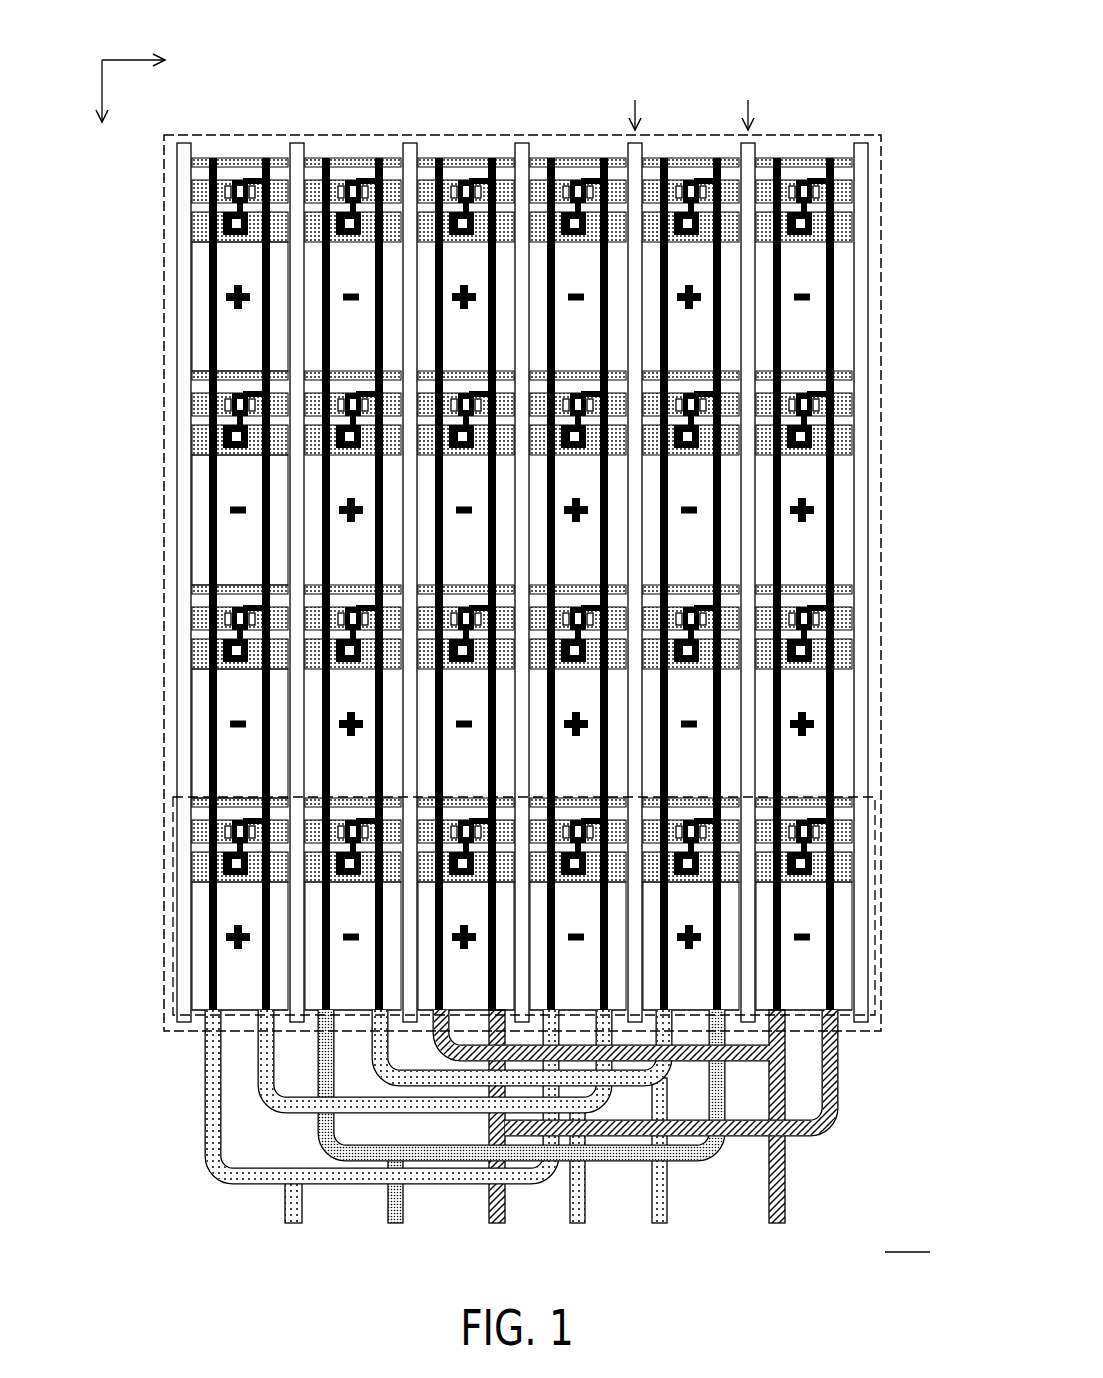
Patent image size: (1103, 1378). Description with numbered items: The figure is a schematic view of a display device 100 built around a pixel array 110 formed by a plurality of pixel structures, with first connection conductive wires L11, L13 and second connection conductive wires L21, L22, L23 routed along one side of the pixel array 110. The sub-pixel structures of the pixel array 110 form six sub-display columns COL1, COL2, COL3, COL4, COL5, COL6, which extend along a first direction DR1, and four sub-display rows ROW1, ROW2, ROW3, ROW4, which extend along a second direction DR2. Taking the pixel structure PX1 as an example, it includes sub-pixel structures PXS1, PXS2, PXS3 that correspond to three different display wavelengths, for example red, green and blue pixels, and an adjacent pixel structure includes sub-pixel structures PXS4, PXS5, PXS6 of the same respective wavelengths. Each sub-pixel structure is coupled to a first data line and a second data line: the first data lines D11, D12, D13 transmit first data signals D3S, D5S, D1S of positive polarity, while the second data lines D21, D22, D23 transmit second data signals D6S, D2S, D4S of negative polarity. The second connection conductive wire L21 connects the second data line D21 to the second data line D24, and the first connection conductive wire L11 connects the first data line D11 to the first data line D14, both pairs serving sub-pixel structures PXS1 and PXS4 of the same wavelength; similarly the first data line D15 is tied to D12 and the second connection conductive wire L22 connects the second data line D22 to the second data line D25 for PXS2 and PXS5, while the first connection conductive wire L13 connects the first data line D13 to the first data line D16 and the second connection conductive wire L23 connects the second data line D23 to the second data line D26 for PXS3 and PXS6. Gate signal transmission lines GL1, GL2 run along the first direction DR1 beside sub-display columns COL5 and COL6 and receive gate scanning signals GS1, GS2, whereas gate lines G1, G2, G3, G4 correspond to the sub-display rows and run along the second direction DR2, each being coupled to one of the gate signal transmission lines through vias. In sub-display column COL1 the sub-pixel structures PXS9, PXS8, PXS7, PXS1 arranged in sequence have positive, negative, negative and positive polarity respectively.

The display device 100 is at (907, 1238).
The pixel array 110 is at (882, 192).
The pixel structure PX1 is at (173, 983).
The sub-pixel structure PXS1 is at (240, 946).
The sub-pixel structure PXS2 is at (353, 946).
The sub-pixel structure PXS3 is at (466, 946).
The sub-pixel structure PXS4 is at (578, 946).
The sub-pixel structure PXS5 is at (691, 946).
The sub-pixel structure PXS6 is at (804, 946).
The sub-pixel structure PXS7 is at (196, 745).
The sub-pixel structure PXS8 is at (196, 531).
The sub-pixel structure PXS9 is at (196, 318).
The gate line G1 is at (172, 835).
The gate line G2 is at (172, 622).
The gate line G3 is at (172, 407).
The gate line G4 is at (172, 195).
The gate signal transmission line GL1 is at (641, 150).
The gate signal transmission line GL2 is at (754, 150).
The gate scanning signal GS1 is at (635, 101).
The gate scanning signal GS2 is at (748, 101).
The sub-display column COL1 is at (238, 88).
The sub-display column COL2 is at (353, 88).
The sub-display column COL3 is at (467, 88).
The sub-display column COL4 is at (582, 88).
The sub-display column COL5 is at (696, 88).
The sub-display column COL6 is at (812, 88).
The sub-display row ROW1 is at (892, 301).
The sub-display row ROW2 is at (892, 514).
The sub-display row ROW3 is at (892, 728).
The sub-display row ROW4 is at (892, 941).
The first data line D11 is at (261, 912).
The first data line D12 is at (330, 973).
The first data line D13 is at (443, 973).
The first data line D14 is at (600, 912).
The first data line D15 is at (713, 912).
The first data line D16 is at (780, 912).
The second data line D21 is at (208, 968).
The second data line D22 is at (374, 912).
The second data line D23 is at (487, 912).
The second data line D24 is at (556, 973).
The second data line D25 is at (670, 973).
The second data line D26 is at (880, 900).
The first connection conductive wire L11 is at (271, 1112).
The first connection conductive wire L13 is at (690, 1062).
The second connection conductive wire L21 is at (205, 1158).
The second connection conductive wire L22 is at (432, 1086).
The second connection conductive wire L23 is at (840, 1112).
The first data signal D1S is at (777, 1137).
The second data signal D2S is at (662, 1171).
The first data signal D3S is at (581, 1185).
The second data signal D4S is at (506, 1137).
The first data signal D5S is at (399, 1209).
The second data signal D6S is at (296, 1220).
The first direction DR1 is at (84, 91).
The second direction DR2 is at (133, 47).